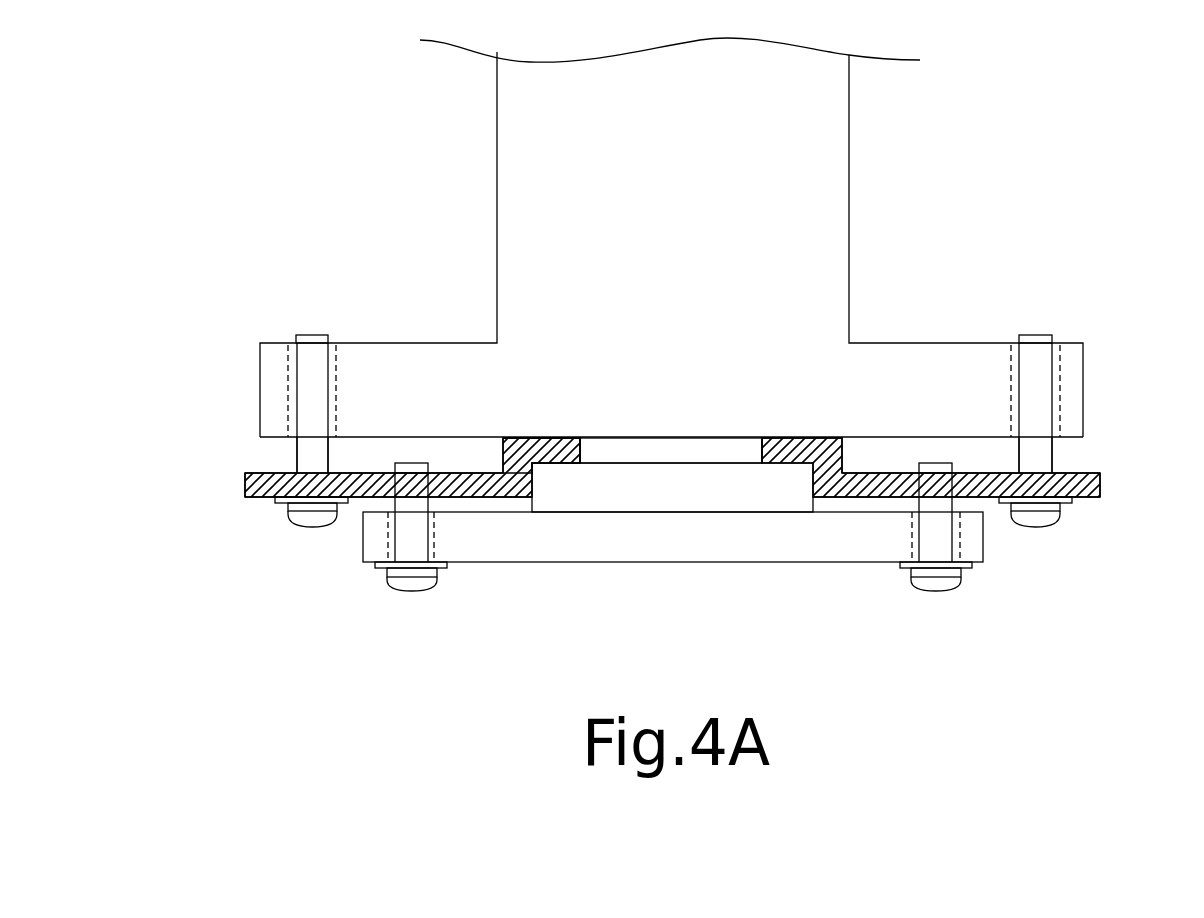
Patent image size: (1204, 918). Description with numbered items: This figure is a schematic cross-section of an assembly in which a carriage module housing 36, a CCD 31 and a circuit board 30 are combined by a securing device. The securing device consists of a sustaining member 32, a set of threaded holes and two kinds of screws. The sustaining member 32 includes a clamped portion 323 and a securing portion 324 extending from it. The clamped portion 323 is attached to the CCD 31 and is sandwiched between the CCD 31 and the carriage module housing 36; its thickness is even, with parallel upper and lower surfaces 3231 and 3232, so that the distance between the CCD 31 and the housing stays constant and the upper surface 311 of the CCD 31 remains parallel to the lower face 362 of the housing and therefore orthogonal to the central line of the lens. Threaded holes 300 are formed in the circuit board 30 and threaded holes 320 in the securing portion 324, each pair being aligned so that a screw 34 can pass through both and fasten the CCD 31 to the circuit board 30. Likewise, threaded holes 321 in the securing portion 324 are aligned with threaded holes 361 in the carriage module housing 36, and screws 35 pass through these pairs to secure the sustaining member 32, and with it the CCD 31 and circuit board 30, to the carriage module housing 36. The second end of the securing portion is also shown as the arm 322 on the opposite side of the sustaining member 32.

The circuit board 30 is at (680, 528).
The threaded holes 300 is at (435, 536).
The CCD 31 is at (730, 499).
The upper surface of the CCD 311 is at (698, 463).
The sustaining member 32 is at (473, 471).
The threaded holes 320 is at (327, 512).
The threaded holes 321 is at (290, 473).
The second arm 322 is at (1056, 473).
The clamped portion 323 is at (533, 437).
The upper surface of the clamped portion 3231 is at (547, 437).
The lower surface of the clamped portion 3232 is at (560, 463).
The securing portion 324 is at (245, 497).
The screws 34 is at (410, 530).
The screws 35 is at (312, 463).
The carriage module housing 36 is at (833, 197).
The threaded holes 361 is at (293, 390).
The lower face 362 is at (672, 437).